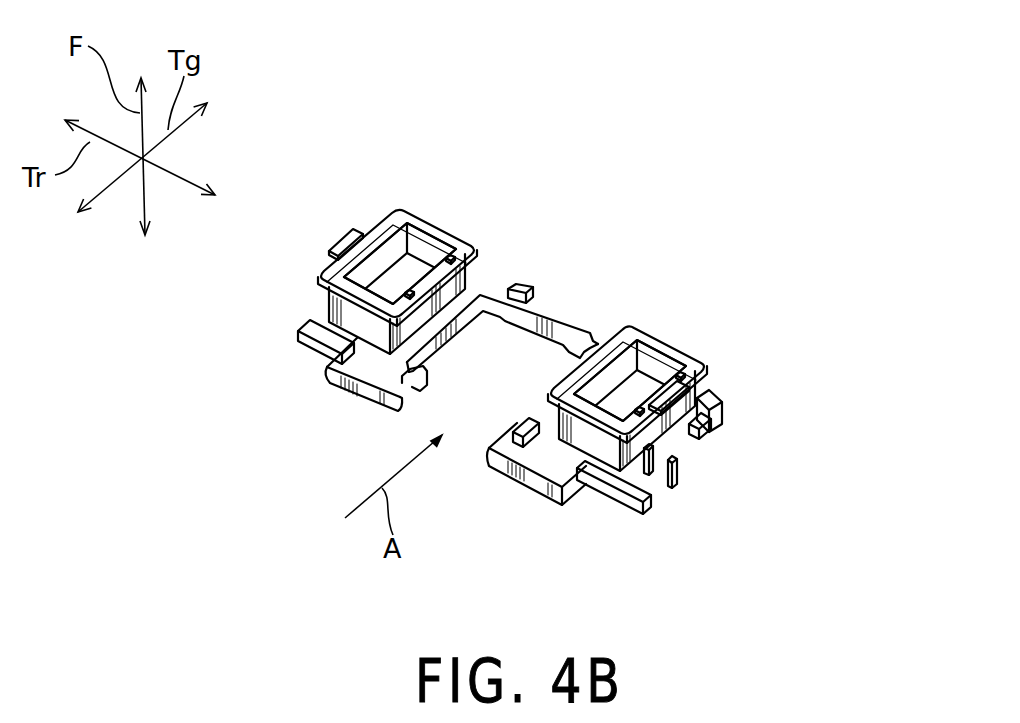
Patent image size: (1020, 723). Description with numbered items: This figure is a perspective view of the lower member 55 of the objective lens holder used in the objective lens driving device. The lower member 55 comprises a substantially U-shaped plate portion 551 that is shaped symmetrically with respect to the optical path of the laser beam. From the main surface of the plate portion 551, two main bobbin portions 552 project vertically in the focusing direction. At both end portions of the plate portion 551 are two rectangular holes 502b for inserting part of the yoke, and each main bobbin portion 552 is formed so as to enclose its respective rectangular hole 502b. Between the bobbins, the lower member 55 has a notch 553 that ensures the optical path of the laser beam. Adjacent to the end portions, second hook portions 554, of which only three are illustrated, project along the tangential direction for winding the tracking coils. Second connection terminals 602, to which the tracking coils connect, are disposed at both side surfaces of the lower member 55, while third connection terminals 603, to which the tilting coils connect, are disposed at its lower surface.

The lower member 55 is at (622, 184).
The rectangular hole 502b is at (383, 242).
The substantially U-shaped plate portion 551 is at (604, 470).
The main bobbin portion 552 is at (327, 304).
The notch 553 is at (427, 392).
The second hook portion 554 is at (521, 286).
The second connection terminal 602 is at (304, 330).
The third connection terminal 603 is at (660, 480).